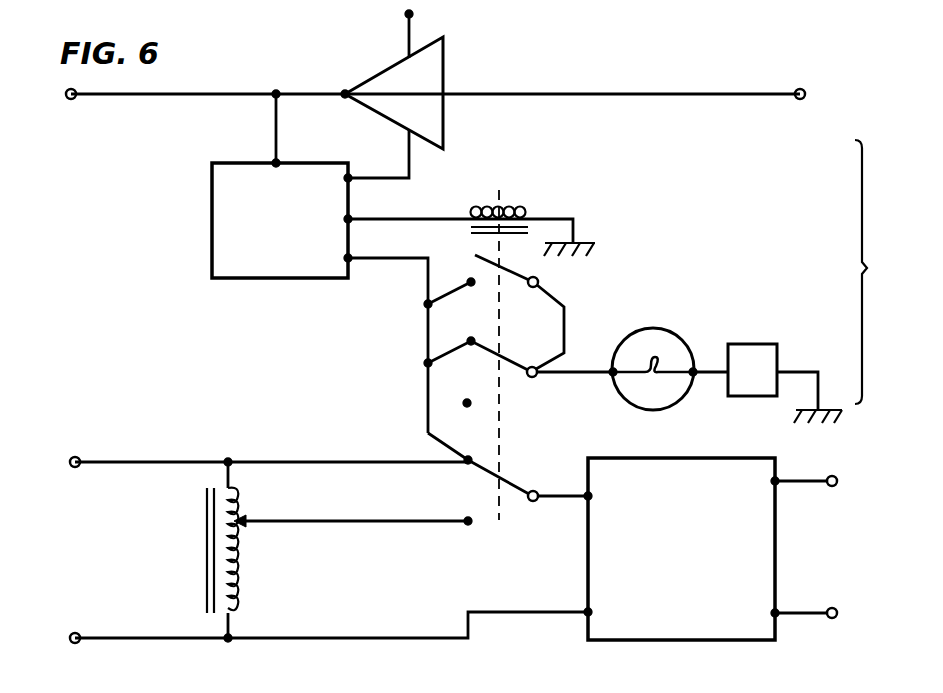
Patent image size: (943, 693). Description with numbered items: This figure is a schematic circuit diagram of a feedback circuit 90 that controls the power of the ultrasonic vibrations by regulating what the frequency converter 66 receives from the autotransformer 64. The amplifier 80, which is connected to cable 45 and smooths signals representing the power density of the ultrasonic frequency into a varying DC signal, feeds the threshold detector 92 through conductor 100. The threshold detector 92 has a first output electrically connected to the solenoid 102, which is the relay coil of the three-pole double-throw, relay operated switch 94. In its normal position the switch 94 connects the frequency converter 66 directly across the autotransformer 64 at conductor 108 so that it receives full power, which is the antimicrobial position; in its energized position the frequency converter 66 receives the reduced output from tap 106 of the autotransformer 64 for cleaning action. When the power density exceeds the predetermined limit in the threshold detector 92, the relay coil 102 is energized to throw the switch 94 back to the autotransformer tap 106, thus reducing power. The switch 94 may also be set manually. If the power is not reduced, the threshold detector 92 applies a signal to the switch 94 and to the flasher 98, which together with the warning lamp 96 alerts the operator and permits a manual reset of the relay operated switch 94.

The cable 45 is at (653, 94).
The autotransformer 64 is at (238, 566).
The frequency converter 66 is at (695, 470).
The amplifier 80 is at (432, 69).
The feedback circuit 90 is at (877, 272).
The threshold detector 92 is at (246, 265).
The three-pole double-throw, relay operated switch 94 is at (421, 357).
The warning lamp 96 is at (639, 346).
The flasher 98 is at (745, 336).
The conductor 100 is at (276, 143).
The solenoid 102 is at (513, 195).
The tap 106 is at (478, 487).
The conductor 108 is at (150, 460).